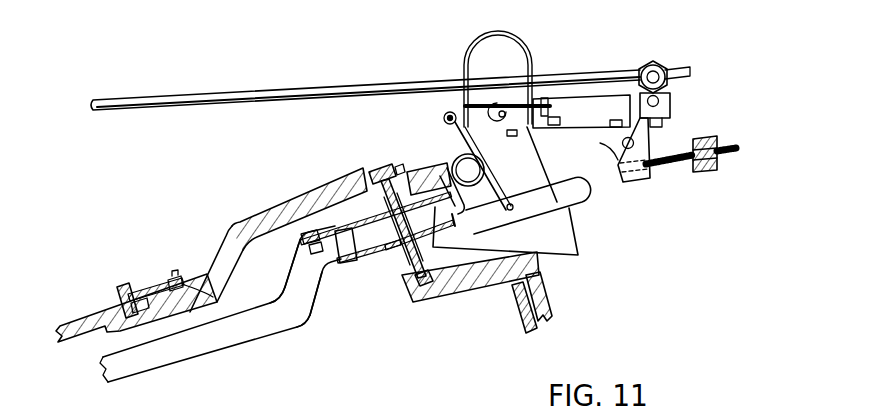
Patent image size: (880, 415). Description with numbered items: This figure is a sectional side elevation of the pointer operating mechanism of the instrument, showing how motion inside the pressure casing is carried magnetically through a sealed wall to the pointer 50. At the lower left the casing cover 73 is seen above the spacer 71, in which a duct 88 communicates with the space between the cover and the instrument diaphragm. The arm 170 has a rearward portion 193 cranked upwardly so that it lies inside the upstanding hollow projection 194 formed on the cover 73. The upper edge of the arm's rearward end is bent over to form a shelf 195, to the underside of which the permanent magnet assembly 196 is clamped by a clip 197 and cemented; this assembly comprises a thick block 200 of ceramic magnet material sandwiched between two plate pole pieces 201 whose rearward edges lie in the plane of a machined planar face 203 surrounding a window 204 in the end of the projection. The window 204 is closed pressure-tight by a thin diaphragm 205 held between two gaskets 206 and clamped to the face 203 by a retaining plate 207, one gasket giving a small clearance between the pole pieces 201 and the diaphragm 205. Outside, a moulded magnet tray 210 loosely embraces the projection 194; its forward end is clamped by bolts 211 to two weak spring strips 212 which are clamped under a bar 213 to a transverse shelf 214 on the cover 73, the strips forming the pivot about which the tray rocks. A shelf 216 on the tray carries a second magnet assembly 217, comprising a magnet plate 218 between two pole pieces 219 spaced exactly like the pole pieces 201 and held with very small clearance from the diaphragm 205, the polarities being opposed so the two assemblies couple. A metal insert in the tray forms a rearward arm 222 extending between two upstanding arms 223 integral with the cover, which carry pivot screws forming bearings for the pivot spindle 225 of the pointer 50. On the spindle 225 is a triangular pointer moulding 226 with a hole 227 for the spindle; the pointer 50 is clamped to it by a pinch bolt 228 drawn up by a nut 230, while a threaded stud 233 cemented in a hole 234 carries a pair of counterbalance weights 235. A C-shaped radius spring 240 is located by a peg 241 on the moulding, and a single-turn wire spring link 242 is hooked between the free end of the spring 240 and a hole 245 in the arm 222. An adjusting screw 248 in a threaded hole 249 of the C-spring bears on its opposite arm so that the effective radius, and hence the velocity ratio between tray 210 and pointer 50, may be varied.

The pointer 50 is at (140, 100).
The spacer 71 is at (552, 307).
The casing cover 73 is at (88, 321).
The duct 88 is at (524, 293).
The arm 170 is at (206, 350).
The rearward portion of the arm 193 is at (313, 317).
The upstanding hollow projection 194 is at (282, 203).
The shelf 195 is at (300, 241).
The permanent magnet assembly 196 is at (356, 242).
The clip 197 is at (320, 266).
The plate or block of permanent magnet material 200 is at (357, 247).
The plate pole pieces 201 is at (384, 205).
The machined planar face 203 is at (367, 169).
The window 204 is at (414, 288).
The diaphragm 205 is at (398, 270).
The gaskets 206 is at (422, 301).
The retaining plate 207 is at (389, 166).
The magnet tray 210 is at (225, 240).
The bolts 211 is at (126, 286).
The spring strips 212 is at (148, 291).
The bar 213 is at (182, 279).
The transverse shelf 214 is at (212, 298).
The shelf 216 is at (428, 178).
The magnet assembly 217 is at (413, 221).
The plate of permanent magnet material 218 is at (450, 221).
The pole pieces 219 is at (436, 242).
The arm 222 is at (586, 203).
The upstanding arms 223 is at (548, 171).
The pivot spindle 225 is at (495, 102).
The pointer moulding 226 is at (672, 110).
The hole 227 is at (503, 118).
The pinch bolt 228 is at (658, 66).
The nut 230 is at (668, 89).
The screw-threaded stud 233 is at (690, 172).
The hole 234 is at (638, 180).
The counterbalance weights 235 is at (722, 167).
The radius spring 240 is at (520, 42).
The peg 241 is at (558, 121).
The spring link 242 is at (503, 173).
The hole 245 is at (514, 215).
The adjusting screw 248 is at (463, 106).
The screw-threaded hole 249 is at (549, 100).